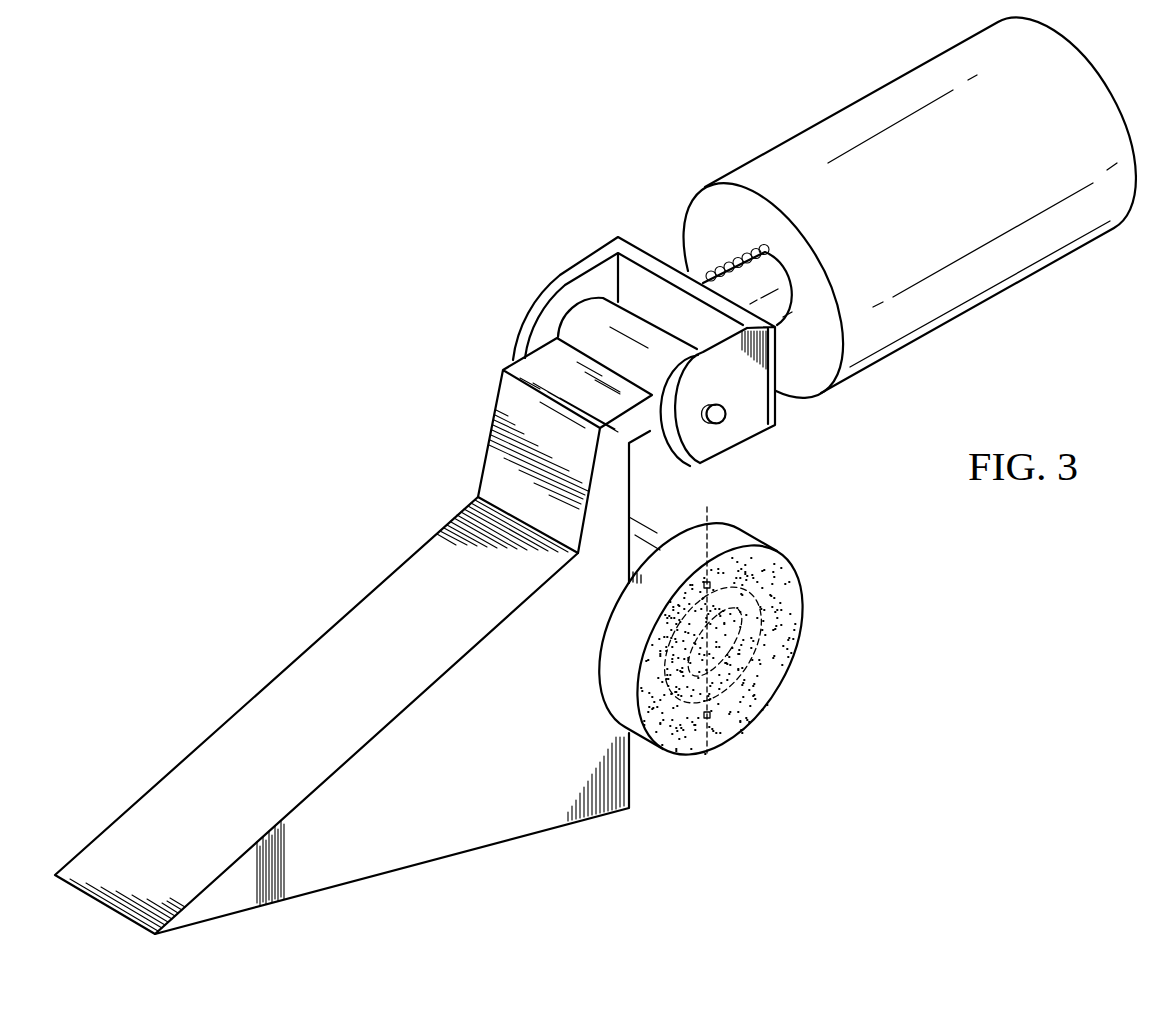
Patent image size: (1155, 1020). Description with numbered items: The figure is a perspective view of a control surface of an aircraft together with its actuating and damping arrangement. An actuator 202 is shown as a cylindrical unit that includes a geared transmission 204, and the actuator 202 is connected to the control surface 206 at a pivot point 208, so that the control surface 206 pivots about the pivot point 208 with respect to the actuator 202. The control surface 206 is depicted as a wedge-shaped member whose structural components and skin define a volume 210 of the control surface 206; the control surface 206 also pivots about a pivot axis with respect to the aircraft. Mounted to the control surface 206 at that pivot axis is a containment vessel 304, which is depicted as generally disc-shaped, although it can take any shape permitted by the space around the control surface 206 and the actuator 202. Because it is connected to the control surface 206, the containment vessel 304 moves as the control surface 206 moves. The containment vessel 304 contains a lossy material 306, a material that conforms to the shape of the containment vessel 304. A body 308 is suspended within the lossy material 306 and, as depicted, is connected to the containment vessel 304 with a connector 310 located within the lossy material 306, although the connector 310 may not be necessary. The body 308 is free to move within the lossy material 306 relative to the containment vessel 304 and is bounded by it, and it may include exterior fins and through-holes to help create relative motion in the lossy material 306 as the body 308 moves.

The actuator 202 is at (840, 109).
The geared transmission 204 is at (727, 266).
The control surface 206 is at (288, 681).
The pivot point 208 is at (724, 422).
The volume 210 is at (393, 868).
The containment vessel 304 is at (812, 598).
The lossy material 306 is at (777, 652).
The body 308 is at (752, 697).
The connector 310 is at (711, 584).